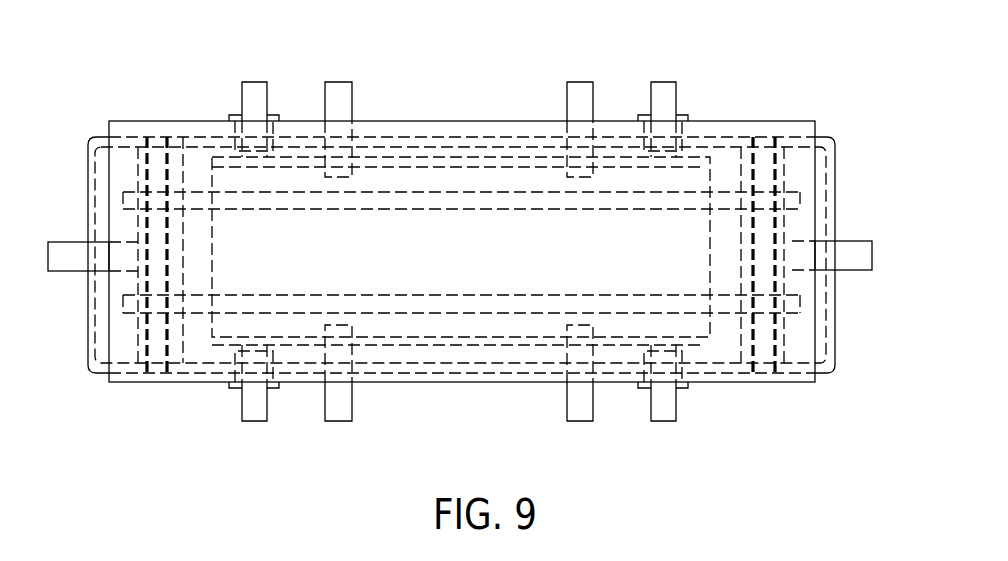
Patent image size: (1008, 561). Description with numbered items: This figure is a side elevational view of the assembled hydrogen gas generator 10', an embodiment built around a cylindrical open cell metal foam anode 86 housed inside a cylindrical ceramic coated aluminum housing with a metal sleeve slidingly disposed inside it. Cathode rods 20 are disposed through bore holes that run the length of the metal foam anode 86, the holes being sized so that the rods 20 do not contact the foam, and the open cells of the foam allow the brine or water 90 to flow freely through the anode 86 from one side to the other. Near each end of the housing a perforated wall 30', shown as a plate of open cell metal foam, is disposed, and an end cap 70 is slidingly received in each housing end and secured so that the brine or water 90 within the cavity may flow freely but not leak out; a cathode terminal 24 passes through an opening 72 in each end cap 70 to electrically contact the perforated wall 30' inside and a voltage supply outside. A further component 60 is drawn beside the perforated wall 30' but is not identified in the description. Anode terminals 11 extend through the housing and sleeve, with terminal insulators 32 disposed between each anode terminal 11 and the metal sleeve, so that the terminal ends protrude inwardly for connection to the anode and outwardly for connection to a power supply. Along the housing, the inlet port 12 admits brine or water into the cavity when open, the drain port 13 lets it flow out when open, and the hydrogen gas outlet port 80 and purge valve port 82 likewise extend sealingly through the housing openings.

The hydrogen gas generator 10' is at (471, 200).
The anode terminal 11 is at (253, 88).
The inlet port 12 is at (342, 397).
The drain port 13 is at (578, 412).
The cathode rods 20 is at (400, 206).
The cathode terminal 24 is at (60, 263).
The perforated wall 30' is at (478, 259).
The terminal insulators 32 is at (268, 115).
The seal 60 is at (178, 140).
The end cap 70 is at (90, 367).
The opening 72 is at (822, 282).
The hydrogen gas outlet port 80 is at (337, 87).
The purge valve port 82 is at (574, 101).
The open cell metal foam anode 86 is at (568, 257).
The brine or water 90 is at (720, 150).